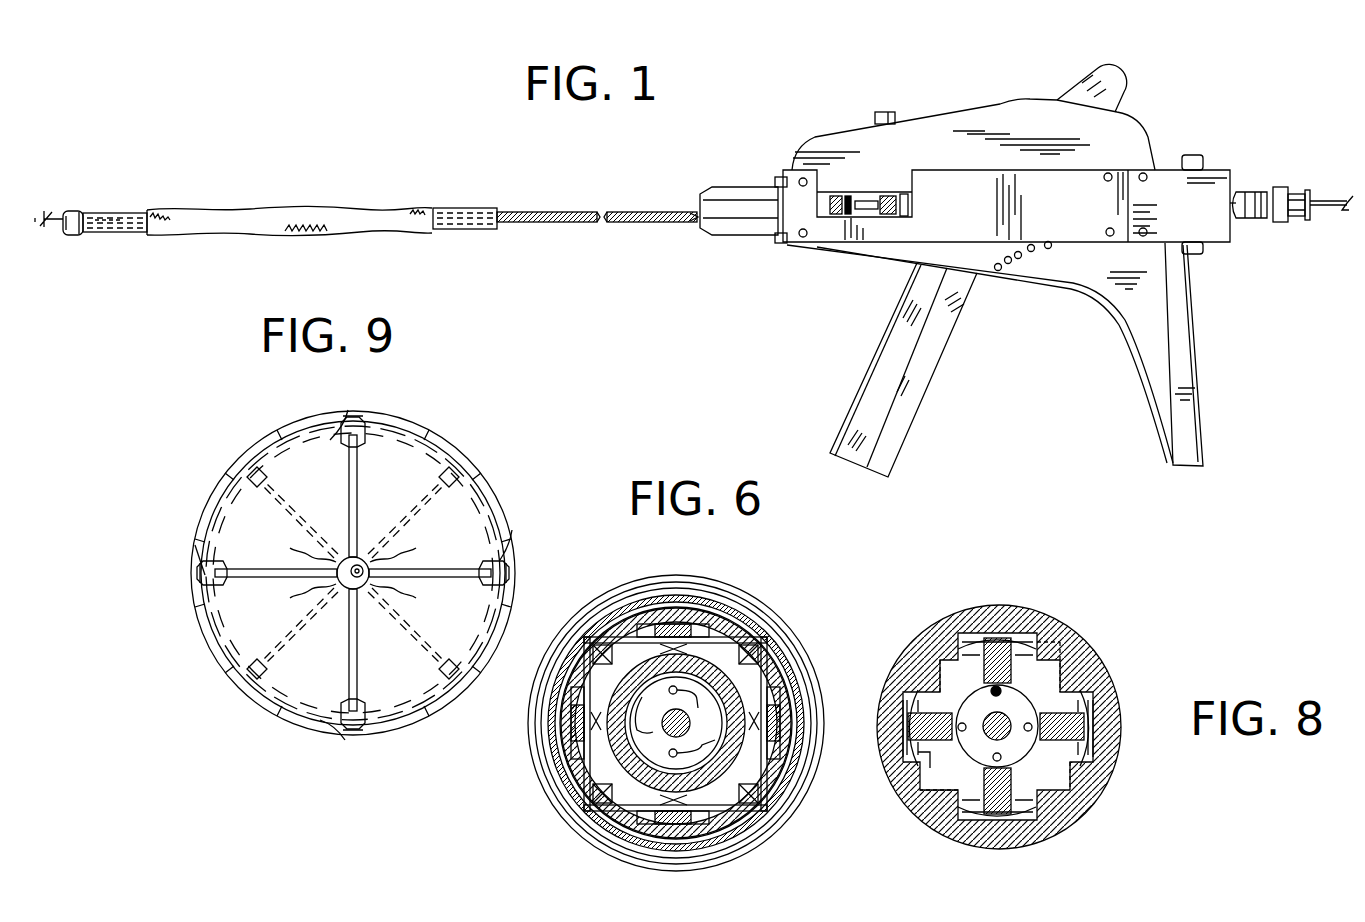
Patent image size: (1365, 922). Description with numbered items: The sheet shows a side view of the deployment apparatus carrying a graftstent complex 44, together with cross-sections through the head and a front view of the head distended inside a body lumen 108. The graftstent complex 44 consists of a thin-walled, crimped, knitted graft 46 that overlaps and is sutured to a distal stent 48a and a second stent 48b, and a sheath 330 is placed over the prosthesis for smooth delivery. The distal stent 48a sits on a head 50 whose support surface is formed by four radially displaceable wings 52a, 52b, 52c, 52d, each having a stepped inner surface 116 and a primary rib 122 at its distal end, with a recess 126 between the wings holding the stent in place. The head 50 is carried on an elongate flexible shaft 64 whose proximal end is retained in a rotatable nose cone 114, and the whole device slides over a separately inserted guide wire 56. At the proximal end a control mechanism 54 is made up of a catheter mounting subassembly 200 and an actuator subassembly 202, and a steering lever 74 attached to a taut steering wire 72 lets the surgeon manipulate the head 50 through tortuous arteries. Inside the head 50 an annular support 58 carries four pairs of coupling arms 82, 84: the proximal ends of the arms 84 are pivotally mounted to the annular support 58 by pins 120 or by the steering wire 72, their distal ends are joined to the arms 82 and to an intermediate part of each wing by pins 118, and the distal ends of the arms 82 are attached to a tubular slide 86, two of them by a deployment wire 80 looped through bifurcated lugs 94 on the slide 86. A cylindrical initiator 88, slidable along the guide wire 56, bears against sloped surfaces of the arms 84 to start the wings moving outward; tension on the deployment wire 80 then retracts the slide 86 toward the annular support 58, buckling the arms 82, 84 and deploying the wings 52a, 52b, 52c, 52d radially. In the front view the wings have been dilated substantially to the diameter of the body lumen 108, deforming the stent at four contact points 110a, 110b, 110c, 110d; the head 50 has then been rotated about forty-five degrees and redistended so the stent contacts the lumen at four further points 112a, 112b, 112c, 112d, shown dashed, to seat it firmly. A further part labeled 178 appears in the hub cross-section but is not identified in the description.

In FIG. 1, the graftstent complex 44 is at (279, 208).
In FIG. 1, the graft 46 is at (232, 226).
In FIG. 6, the graft 46 is at (785, 652).
In FIG. 1, the distal stent 48a is at (126, 215).
In FIG. 9, the distal stent 48a is at (265, 445).
In FIG. 6, the distal stent 48a is at (550, 668).
In FIG. 1, the stent 48b is at (467, 229).
In FIG. 1, the head 50 is at (86, 236).
In FIG. 9, the wing 52a is at (372, 418).
In FIG. 6, the wing 52a is at (740, 622).
In FIG. 8, the wing 52a is at (1073, 637).
In FIG. 9, the wing 52b is at (515, 573).
In FIG. 6, the wing 52b is at (783, 768).
In FIG. 8, the wing 52b is at (1118, 762).
In FIG. 9, the wing 52c is at (350, 742).
In FIG. 6, the wing 52c is at (703, 828).
In FIG. 8, the wing 52c is at (1003, 827).
In FIG. 9, the wing 52d is at (192, 585).
In FIG. 6, the wing 52d is at (545, 790).
In FIG. 8, the wing 52d is at (960, 823).
In FIG. 1, the control mechanism 54 is at (999, 106).
In FIG. 1, the guide wire 56 is at (67, 213).
In FIG. 9, the guide wire 56 is at (370, 566).
In FIG. 6, the guide wire 56 is at (661, 724).
In FIG. 8, the guide wire 56 is at (1003, 733).
In FIG. 8, the annular support 58 is at (1083, 705).
In FIG. 1, the elongate flexible shaft 64 is at (563, 209).
In FIG. 8, the steering wire 72 is at (940, 670).
In FIG. 1, the steering lever 74 is at (1205, 163).
In FIG. 6, the deployment wire 80 is at (686, 722).
In FIG. 8, the deployment wire 80 is at (1001, 690).
In FIG. 9, the arm 82 is at (356, 490).
In FIG. 6, the arm 82 is at (683, 630).
In FIG. 6, the arm 84 is at (665, 628).
In FIG. 8, the arm 84 is at (932, 690).
In FIG. 9, the tubular slide 86 is at (340, 620).
In FIG. 6, the tubular slide 86 is at (620, 773).
In FIG. 6, the initiator 88 is at (720, 698).
In FIG. 9, the bifurcated lugs 94 is at (318, 560).
In FIG. 9, the body lumen 108 is at (450, 440).
In FIG. 9, the contact point 110a is at (350, 428).
In FIG. 9, the contact point 110b is at (515, 560).
In FIG. 9, the contact point 110c is at (318, 722).
In FIG. 9, the contact point 110d is at (192, 540).
In FIG. 9, the contact point 112a is at (470, 466).
In FIG. 9, the contact point 112b is at (448, 700).
In FIG. 9, the contact point 112c is at (246, 705).
In FIG. 9, the contact point 112d is at (228, 458).
In FIG. 1, the nose cone 114 is at (733, 227).
In FIG. 8, the stepped inner surface 116 is at (1040, 640).
In FIG. 6, the pin 118 is at (580, 618).
In FIG. 8, the pin 120 is at (1103, 810).
In FIG. 1, the primary rib 122 is at (76, 212).
In FIG. 9, the primary rib 122 is at (348, 410).
In FIG. 1, the recess 126 is at (100, 223).
In FIG. 8, the retainer 178 is at (912, 760).
In FIG. 1, the catheter mounting subassembly 200 is at (1217, 232).
In FIG. 1, the actuator subassembly 202 is at (823, 150).
In FIG. 6, the sheath 330 is at (565, 817).